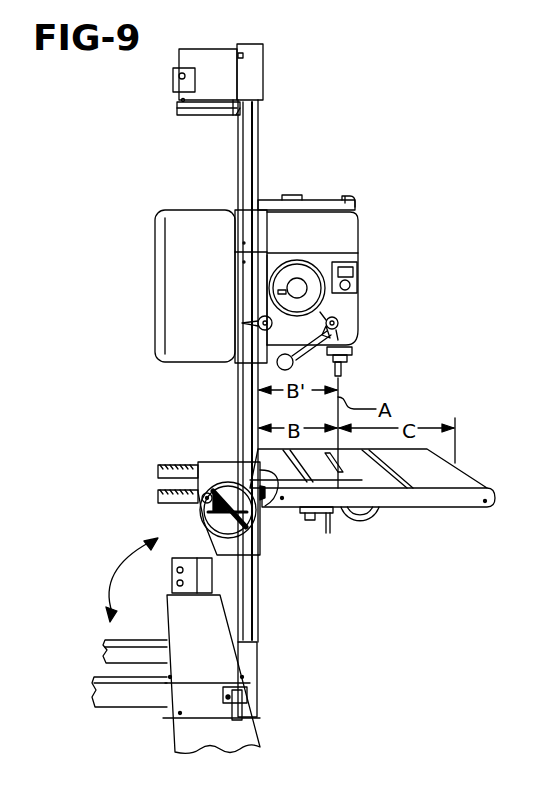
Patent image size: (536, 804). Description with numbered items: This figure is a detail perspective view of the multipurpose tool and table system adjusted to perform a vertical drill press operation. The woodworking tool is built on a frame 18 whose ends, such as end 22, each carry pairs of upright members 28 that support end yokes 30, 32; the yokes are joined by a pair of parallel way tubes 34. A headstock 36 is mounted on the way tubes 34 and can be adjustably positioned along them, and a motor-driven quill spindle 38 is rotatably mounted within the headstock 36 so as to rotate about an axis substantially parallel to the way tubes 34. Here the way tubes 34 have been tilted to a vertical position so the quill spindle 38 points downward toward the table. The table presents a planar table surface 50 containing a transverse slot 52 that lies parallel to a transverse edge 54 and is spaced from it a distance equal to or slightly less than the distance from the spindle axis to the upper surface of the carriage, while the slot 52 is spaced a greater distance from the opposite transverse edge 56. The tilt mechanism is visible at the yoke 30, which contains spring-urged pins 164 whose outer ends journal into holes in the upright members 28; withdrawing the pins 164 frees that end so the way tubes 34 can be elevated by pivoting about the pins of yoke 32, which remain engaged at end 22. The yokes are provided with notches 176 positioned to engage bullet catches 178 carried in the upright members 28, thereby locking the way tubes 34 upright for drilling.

The frame 18 is at (148, 632).
The end 22 is at (252, 710).
The upright members 28 is at (203, 570).
The end yoke 30 is at (263, 90).
The end yoke 32 is at (253, 655).
The way tubes 34 is at (246, 413).
The headstock 36 is at (347, 230).
The quill spindle 38 is at (342, 370).
The table surface 50 is at (422, 475).
The transverse slot 52 is at (350, 472).
The transverse edge 54 is at (265, 492).
The opposite transverse edge 56 is at (458, 468).
The pins 164 is at (174, 72).
The notches 176 is at (241, 55).
The bullet catches 178 is at (208, 695).